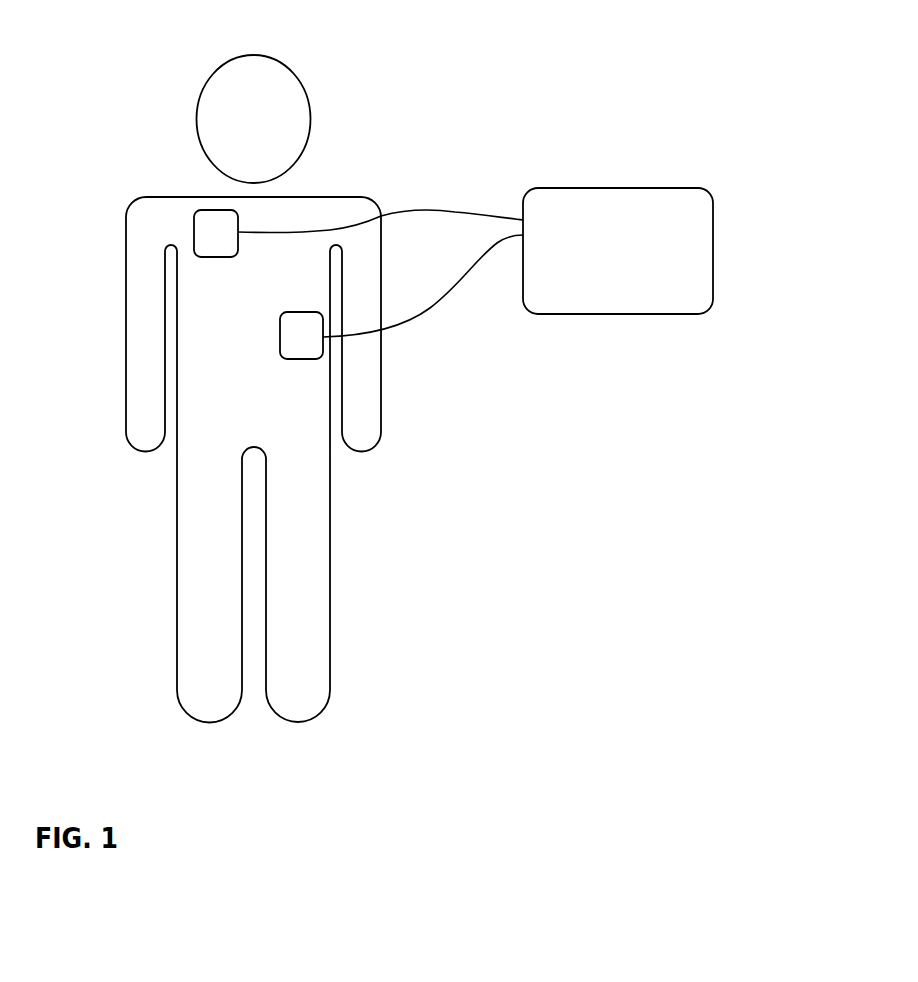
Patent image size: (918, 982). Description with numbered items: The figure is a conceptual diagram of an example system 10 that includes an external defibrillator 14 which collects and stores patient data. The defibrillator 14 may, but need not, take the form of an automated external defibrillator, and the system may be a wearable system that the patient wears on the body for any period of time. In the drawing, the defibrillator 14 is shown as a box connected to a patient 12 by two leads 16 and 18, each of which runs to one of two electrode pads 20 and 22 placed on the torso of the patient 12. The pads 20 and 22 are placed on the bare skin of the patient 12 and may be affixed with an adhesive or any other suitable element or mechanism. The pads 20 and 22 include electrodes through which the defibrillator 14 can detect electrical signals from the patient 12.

The system 10 is at (554, 113).
The patient 12 is at (126, 270).
The external defibrillator 14 is at (715, 248).
The lead 16 is at (427, 211).
The lead 18 is at (447, 292).
The electrode pad 20 is at (194, 225).
The electrode pad 22 is at (280, 337).